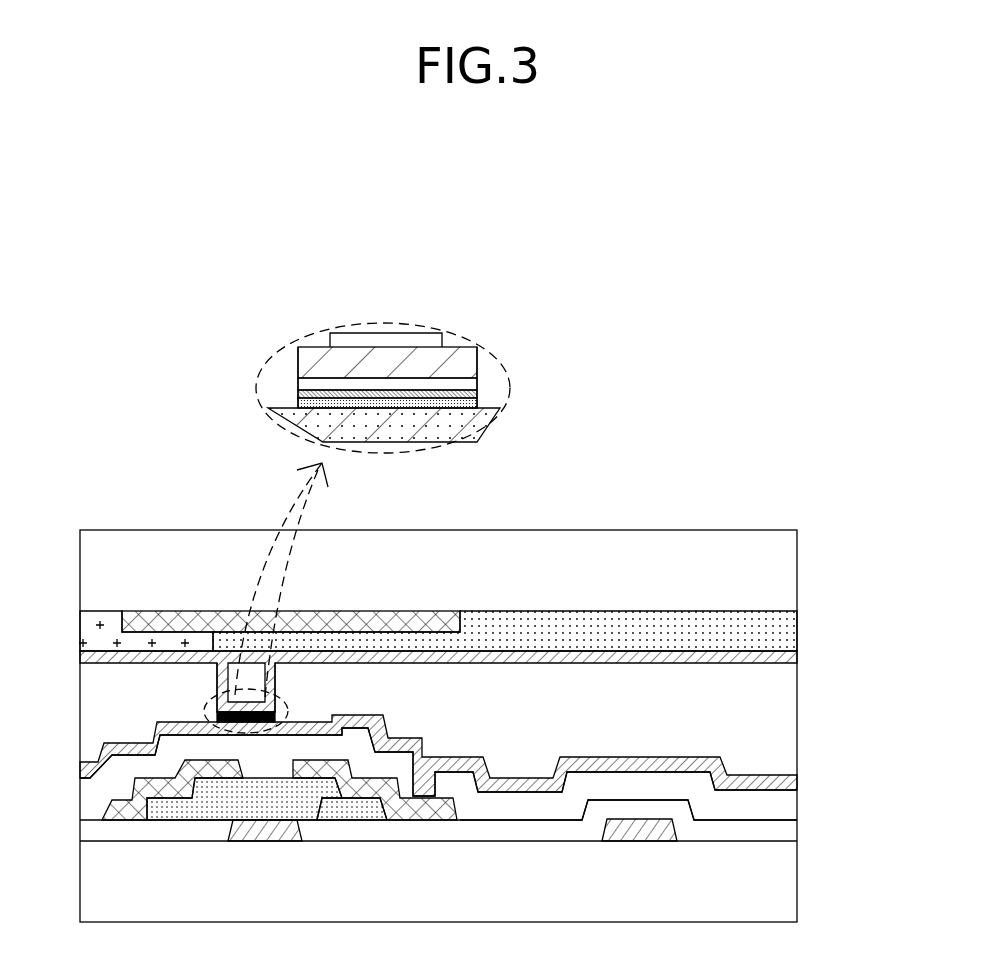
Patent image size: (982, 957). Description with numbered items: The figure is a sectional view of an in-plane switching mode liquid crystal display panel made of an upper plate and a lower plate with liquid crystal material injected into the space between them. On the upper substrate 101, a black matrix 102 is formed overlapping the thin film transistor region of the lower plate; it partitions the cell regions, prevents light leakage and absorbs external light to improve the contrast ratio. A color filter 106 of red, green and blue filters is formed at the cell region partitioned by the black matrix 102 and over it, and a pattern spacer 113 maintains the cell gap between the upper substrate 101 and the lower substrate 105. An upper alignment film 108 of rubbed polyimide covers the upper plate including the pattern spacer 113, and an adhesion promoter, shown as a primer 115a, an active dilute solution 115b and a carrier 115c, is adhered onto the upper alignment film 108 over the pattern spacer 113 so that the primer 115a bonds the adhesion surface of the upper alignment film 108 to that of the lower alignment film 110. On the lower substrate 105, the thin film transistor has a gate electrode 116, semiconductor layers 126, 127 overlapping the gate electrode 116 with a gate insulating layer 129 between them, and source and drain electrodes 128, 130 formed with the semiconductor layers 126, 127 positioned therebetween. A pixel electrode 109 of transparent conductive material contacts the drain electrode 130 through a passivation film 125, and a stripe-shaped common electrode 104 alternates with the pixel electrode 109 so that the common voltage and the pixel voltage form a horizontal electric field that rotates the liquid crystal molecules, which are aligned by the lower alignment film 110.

The upper substrate 101 is at (797, 574).
The black matrix 102 is at (328, 611).
The common electrode 104 is at (643, 832).
The lower substrate 105 is at (797, 865).
The color filter 106 is at (797, 625).
The upper alignment film 108 is at (797, 657).
The pixel electrode 109 is at (797, 790).
The lower alignment film 110 is at (797, 774).
The pattern spacer 113 is at (276, 676).
The primer 115a is at (497, 412).
The active dilute solution 115b is at (478, 395).
The carrier 115c is at (478, 380).
The gate electrode 116 is at (267, 833).
The passivation film 125 is at (797, 808).
The semiconductor layer 126 is at (190, 821).
The semiconductor layer 127 is at (342, 800).
The source electrode 128 is at (123, 821).
The gate insulating layer 129 is at (493, 832).
The drain electrode 130 is at (398, 812).